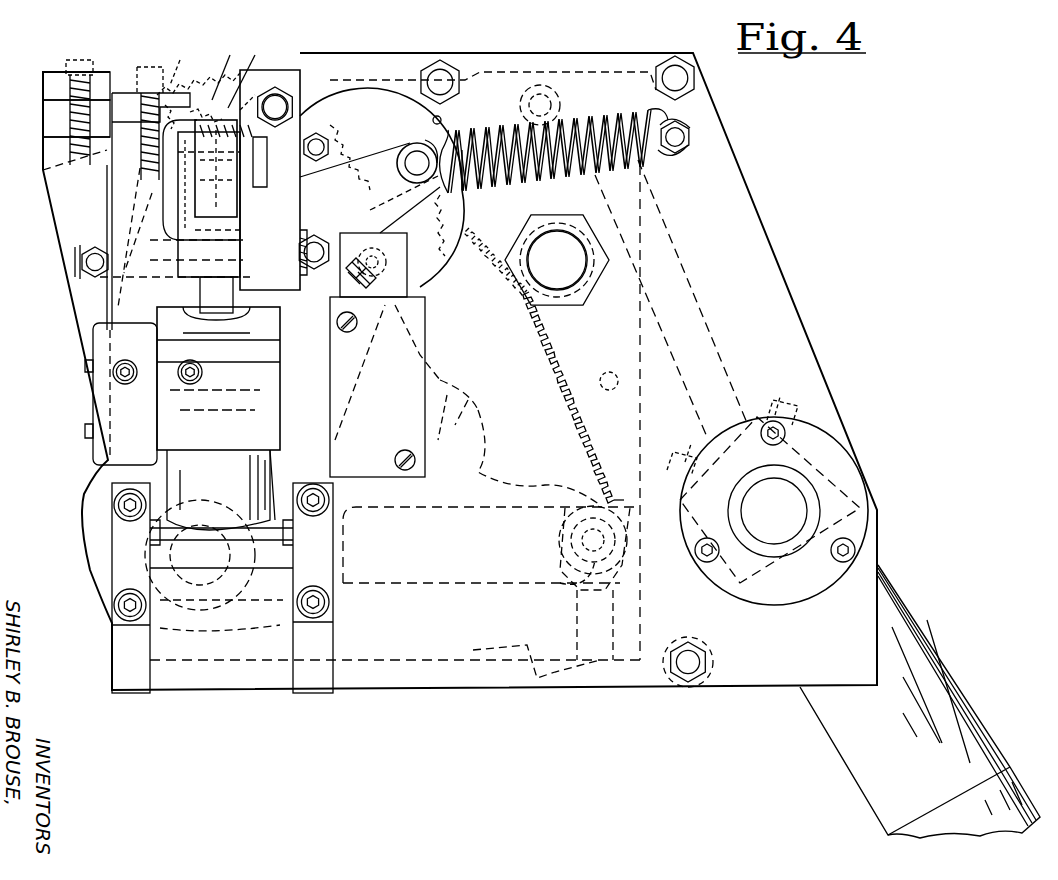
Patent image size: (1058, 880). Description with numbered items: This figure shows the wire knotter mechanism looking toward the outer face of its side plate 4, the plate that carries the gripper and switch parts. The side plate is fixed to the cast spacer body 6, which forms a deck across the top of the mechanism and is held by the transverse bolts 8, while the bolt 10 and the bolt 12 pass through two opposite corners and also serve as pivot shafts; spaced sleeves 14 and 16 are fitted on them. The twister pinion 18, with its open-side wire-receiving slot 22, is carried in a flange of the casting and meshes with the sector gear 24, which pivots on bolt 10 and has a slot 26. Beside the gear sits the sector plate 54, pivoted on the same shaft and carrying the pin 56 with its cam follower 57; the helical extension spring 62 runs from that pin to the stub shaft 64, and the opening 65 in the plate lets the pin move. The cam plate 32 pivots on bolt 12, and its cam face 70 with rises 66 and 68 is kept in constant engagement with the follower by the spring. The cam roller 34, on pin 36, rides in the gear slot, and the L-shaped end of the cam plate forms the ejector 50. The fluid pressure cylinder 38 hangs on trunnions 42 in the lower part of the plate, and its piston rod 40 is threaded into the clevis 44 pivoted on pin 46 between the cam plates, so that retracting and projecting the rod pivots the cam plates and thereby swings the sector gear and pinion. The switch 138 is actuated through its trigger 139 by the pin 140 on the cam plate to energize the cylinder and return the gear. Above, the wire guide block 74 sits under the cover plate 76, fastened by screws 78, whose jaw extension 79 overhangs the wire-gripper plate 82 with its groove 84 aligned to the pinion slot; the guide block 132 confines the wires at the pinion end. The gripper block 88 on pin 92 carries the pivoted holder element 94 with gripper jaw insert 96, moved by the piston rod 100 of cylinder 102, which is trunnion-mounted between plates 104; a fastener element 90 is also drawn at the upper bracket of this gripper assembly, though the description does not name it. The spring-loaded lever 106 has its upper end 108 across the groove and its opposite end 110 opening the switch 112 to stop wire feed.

The side plate 4 is at (776, 260).
The spacer body 6 is at (510, 60).
The bolts 8 is at (440, 70).
The bolt 10 is at (222, 572).
The bolt 12 is at (575, 280).
The sleeves 14 is at (195, 500).
The sleeves 16 is at (525, 232).
The twister pinion 18 is at (178, 68).
The wire-receiving slot 22 is at (151, 107).
The sector gear 24 is at (572, 345).
The slot 26 is at (400, 582).
The cam plate 32 is at (441, 417).
The cam roller 34 is at (556, 540).
The pin 36 is at (615, 500).
The fluid pressure cylinder 38 is at (920, 645).
The piston rod 40 is at (683, 323).
The trunnions 42 is at (787, 535).
The clevis 44 is at (605, 192).
The pin 46 is at (556, 80).
The ejector 50 is at (492, 650).
The sector plate 54 is at (345, 206).
The pin 56 is at (417, 152).
The cam follower 57 is at (380, 150).
The helical extension spring 62 is at (600, 118).
The stub shaft 64 is at (683, 137).
The opening 65 is at (440, 117).
The rise 66 is at (385, 202).
The rise 68 is at (526, 457).
The cam face 70 is at (459, 418).
The wire guide block 74 is at (48, 126).
The cover plate 76 is at (48, 84).
The screws 78 is at (66, 68).
The jaw extension 79 is at (246, 69).
The wire-gripper plate 82 is at (112, 215).
The groove 84 is at (226, 64).
The block 88 is at (280, 70).
The nut 90 is at (285, 100).
The pin 92 is at (285, 110).
The holder element 94 is at (240, 200).
The gripper jaw insert 96 is at (192, 195).
The piston rod 100 is at (200, 290).
The fluid pressure cylinder 102 is at (270, 470).
The plates 104 is at (118, 645).
The spring-loaded lever 106 is at (112, 200).
The upper end of lever 108 is at (128, 90).
The opposite end of lever 110 is at (168, 385).
The switch 112 is at (98, 405).
The guide block 132 is at (185, 72).
The switch 138 is at (428, 350).
The trigger 139 is at (445, 287).
The pin 140 is at (611, 391).